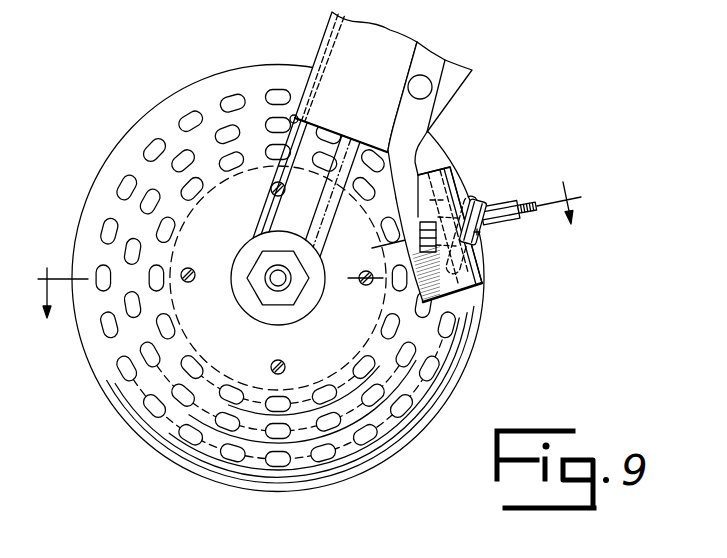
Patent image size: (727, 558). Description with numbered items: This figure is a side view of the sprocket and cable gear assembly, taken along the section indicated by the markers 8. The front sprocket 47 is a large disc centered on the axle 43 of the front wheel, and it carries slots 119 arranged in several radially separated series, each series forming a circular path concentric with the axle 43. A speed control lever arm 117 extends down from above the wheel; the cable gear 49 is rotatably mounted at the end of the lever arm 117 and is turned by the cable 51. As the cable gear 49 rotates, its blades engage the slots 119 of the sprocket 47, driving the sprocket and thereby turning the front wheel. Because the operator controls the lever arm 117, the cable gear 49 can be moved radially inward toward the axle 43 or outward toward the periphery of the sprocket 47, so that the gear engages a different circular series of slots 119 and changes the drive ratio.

The axle 43 is at (276, 274).
The front sprocket 47 is at (479, 325).
The cable gear 49 is at (462, 266).
The cable 51 is at (527, 204).
The speed control lever arm 117 is at (417, 158).
The slots 119 is at (430, 368).
The section line 8- 8 is at (314, 267).